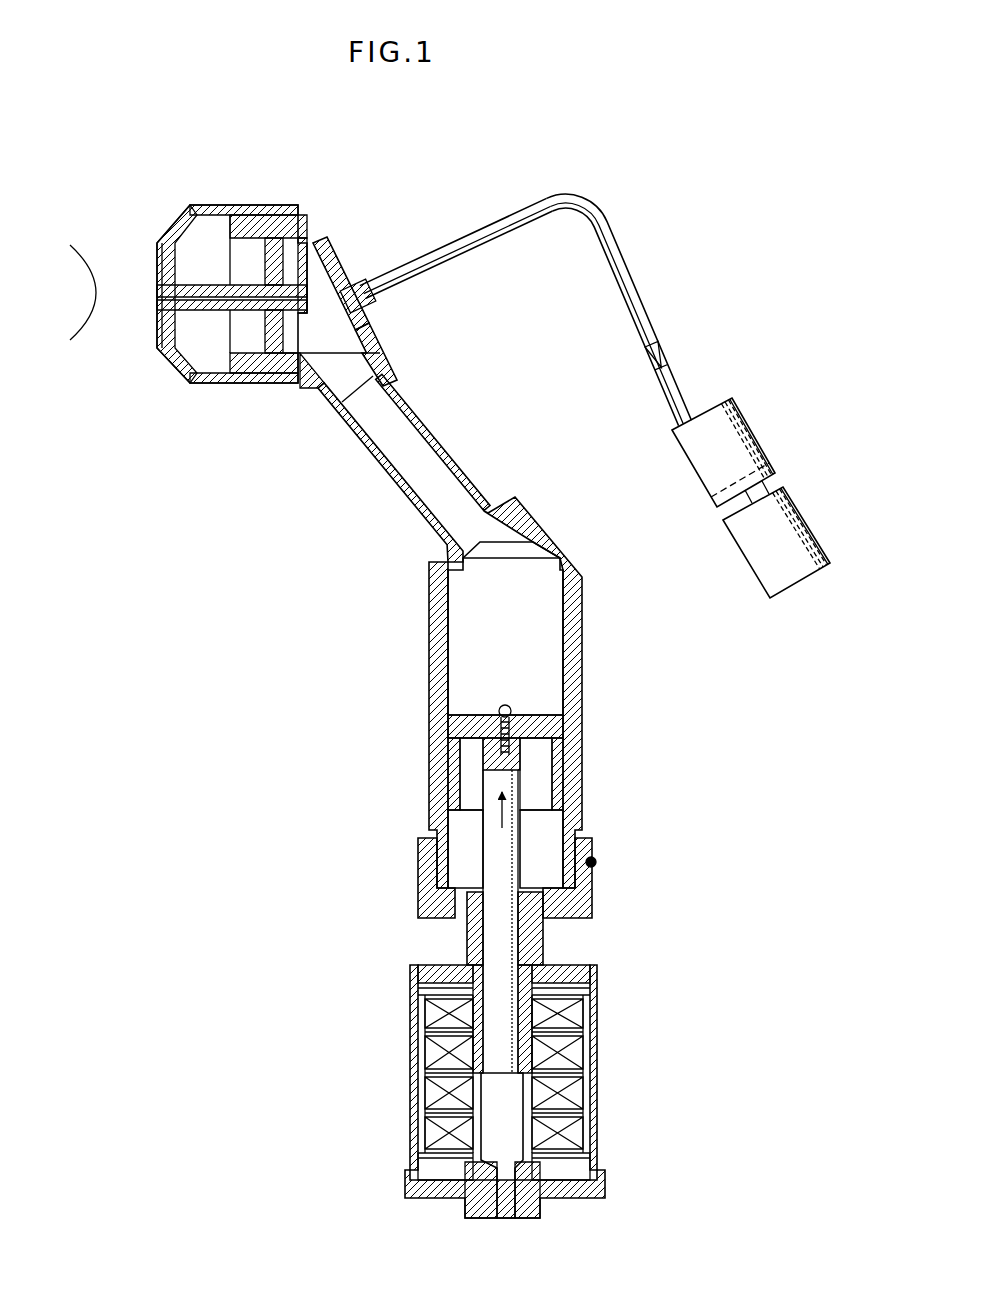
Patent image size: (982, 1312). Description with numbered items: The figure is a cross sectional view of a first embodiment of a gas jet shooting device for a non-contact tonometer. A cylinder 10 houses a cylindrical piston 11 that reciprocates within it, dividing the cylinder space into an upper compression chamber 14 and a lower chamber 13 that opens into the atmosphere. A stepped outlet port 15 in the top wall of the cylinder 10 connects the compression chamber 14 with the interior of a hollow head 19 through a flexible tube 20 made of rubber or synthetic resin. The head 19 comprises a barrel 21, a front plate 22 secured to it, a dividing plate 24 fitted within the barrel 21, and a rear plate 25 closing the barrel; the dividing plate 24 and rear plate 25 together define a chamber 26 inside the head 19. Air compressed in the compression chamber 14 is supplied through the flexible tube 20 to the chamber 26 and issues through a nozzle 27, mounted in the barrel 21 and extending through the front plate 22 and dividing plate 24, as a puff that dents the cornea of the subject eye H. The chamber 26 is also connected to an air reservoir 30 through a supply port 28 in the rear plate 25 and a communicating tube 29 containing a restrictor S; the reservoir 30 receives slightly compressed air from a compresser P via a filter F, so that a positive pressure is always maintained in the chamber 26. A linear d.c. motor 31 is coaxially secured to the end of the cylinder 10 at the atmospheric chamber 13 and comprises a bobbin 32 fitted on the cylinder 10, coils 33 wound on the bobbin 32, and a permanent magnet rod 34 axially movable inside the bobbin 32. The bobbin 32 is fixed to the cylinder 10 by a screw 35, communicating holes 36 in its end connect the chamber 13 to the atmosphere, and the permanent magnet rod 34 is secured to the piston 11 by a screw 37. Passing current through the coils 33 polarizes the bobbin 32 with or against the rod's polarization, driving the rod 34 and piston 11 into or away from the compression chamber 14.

The cylinder 10 is at (580, 632).
The cylindrical piston 11 is at (560, 735).
The lower chamber 13 is at (560, 815).
The compression chamber 14 is at (447, 676).
The stepped outlet port 15 is at (506, 580).
The hollow head 19 is at (356, 262).
The flexible tube 20 is at (408, 506).
The barrel 21 is at (256, 206).
The front plate 22 is at (188, 238).
The dividing plate 24 is at (332, 272).
The rear plate 25 is at (378, 335).
The chamber 26 is at (323, 340).
The nozzle 27 is at (188, 287).
The supply port 28 is at (378, 304).
The communicating tube 29 is at (612, 232).
The air reservoir 30 is at (747, 425).
The linear d.c. motor 31 is at (602, 1006).
The bobbin 32 is at (410, 870).
The coils 33 is at (585, 1040).
The permanent magnet rod 34 is at (490, 1017).
The screw 35 is at (598, 862).
The communicating holes 36 is at (465, 925).
The screw 37 is at (505, 705).
The subject eye H is at (75, 330).
The restrictor S is at (668, 350).
The filter F is at (775, 468).
The compresser P is at (800, 520).